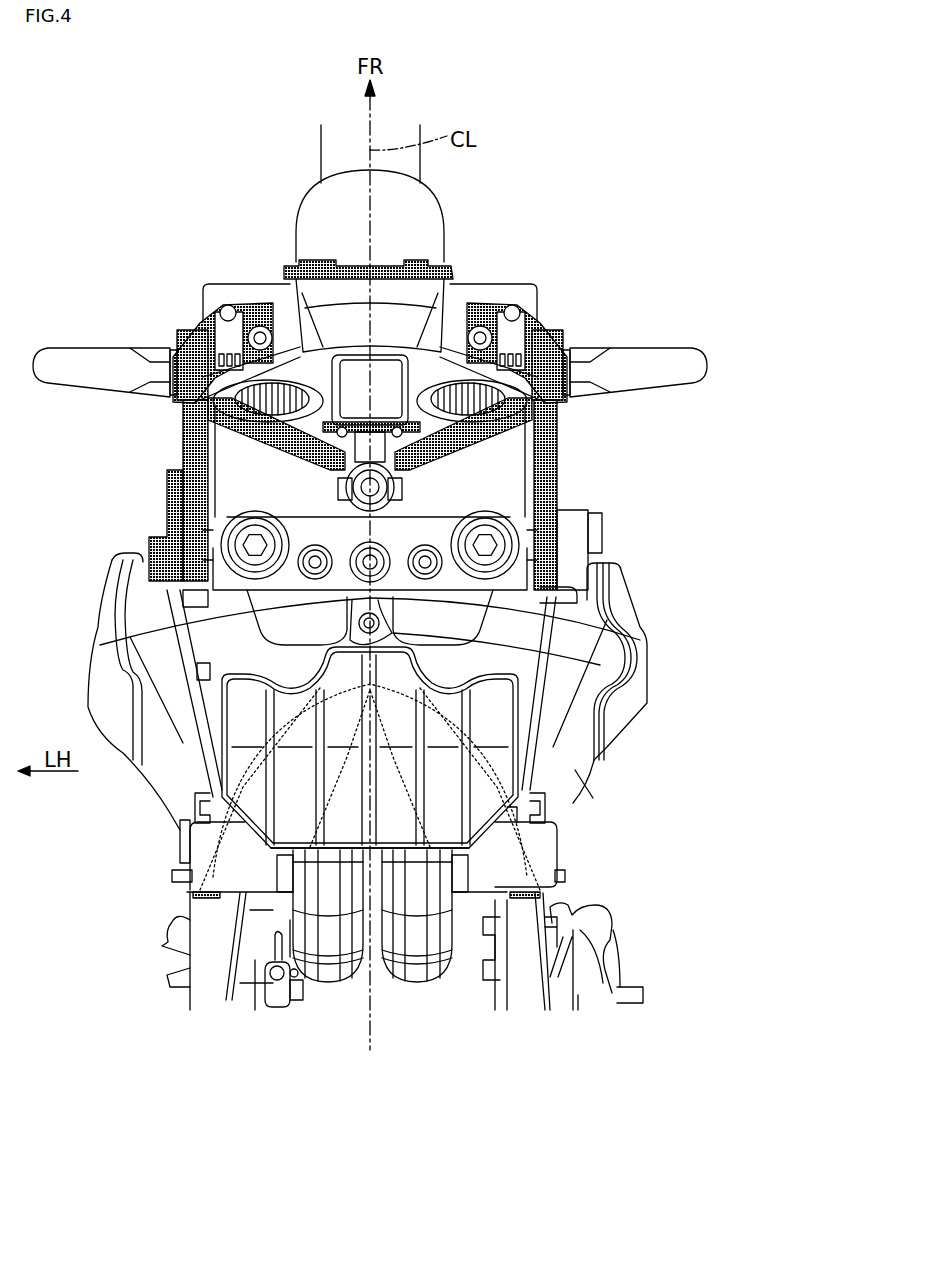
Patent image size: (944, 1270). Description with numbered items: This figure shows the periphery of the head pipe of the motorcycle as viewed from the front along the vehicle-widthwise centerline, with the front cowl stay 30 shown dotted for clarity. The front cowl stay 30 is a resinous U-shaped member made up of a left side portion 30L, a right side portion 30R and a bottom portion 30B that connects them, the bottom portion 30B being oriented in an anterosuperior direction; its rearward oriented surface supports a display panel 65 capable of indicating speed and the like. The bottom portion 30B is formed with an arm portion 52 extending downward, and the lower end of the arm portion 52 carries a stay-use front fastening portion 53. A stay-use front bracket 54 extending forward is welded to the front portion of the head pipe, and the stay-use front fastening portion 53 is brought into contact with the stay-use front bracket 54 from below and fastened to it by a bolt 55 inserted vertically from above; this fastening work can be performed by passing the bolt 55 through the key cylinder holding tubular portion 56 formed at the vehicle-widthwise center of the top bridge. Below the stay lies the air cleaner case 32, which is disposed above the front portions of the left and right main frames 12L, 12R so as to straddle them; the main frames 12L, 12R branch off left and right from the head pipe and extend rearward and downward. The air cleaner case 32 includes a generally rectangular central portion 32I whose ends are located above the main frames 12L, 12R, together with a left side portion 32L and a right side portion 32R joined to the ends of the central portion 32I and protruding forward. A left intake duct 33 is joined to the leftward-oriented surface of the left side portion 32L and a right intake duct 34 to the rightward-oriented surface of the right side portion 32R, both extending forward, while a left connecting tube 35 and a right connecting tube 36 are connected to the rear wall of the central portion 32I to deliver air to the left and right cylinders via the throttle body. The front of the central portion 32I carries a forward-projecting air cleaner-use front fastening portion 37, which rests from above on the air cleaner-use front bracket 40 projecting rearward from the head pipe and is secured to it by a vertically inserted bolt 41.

The display panel 65 is at (360, 290).
The arm portion 52 is at (337, 373).
The key cylinder holding tubular portion 56 is at (441, 262).
The bottom portion 30B is at (486, 310).
The front cowl stay 30 is at (560, 337).
The left side portion 30L is at (170, 458).
The right side portion 30R is at (570, 458).
The stay-use front fastening portion 53 is at (345, 470).
The bolt 55 is at (338, 477).
The stay-use front bracket 54 is at (400, 500).
The left intake duct 33 is at (93, 622).
The right intake duct 34 is at (630, 602).
The bolt 41 is at (100, 645).
The air cleaner-use front bracket 40 is at (640, 640).
The air cleaner-use front fastening portion 37 is at (600, 665).
The left connecting tube 35 is at (337, 863).
The right connecting tube 36 is at (407, 862).
The left main frame 12L is at (200, 983).
The right main frame 12R is at (530, 990).
The left side portion 32L is at (150, 815).
The central portion 32I is at (297, 833).
The right side portion 32R is at (590, 765).
The air cleaner case 32 is at (467, 1093).